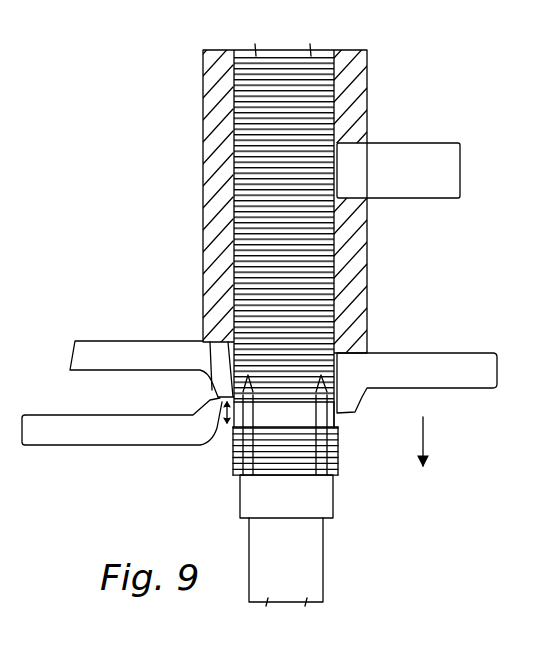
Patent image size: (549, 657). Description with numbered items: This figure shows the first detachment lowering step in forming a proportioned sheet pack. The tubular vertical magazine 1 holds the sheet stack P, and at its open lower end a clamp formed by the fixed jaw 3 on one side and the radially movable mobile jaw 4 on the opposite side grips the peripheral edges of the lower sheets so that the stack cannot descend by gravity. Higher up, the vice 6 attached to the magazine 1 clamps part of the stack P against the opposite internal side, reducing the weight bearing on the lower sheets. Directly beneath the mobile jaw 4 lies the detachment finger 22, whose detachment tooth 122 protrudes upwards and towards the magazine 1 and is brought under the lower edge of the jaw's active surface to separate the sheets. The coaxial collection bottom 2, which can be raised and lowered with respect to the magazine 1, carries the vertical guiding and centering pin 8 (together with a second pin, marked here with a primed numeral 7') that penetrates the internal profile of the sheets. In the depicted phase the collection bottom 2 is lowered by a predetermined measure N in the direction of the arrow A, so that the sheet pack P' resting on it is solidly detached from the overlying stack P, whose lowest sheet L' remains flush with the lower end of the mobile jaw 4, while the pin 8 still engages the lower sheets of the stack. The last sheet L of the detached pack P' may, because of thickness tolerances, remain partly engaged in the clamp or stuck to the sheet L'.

The vertical magazine 1 is at (362, 76).
The sheet stack P is at (295, 201).
The vice 6 is at (426, 141).
The lower sheet of stack L' is at (340, 331).
The last sheet of detached pack L is at (346, 354).
The fixed jaw 3 is at (456, 365).
The mobile jaw 4 is at (104, 347).
The detachment tooth 122 is at (223, 398).
The detachment finger 22 is at (50, 433).
The predetermined lowering measure N is at (222, 425).
The guiding and centering pin 8 is at (324, 418).
The sheet pack P' is at (307, 456).
The nut thread 7' is at (269, 471).
The collection bottom 2 is at (335, 503).
The direction arrow A is at (428, 433).